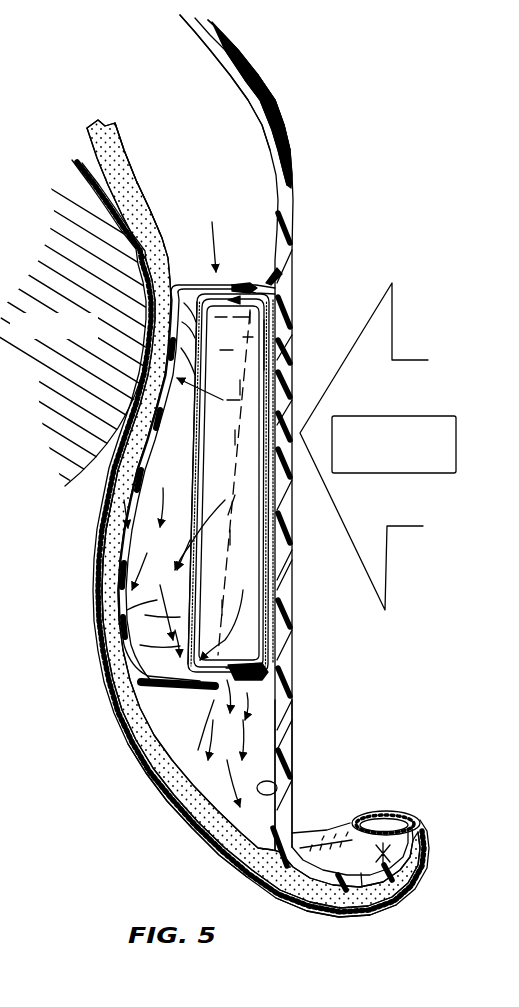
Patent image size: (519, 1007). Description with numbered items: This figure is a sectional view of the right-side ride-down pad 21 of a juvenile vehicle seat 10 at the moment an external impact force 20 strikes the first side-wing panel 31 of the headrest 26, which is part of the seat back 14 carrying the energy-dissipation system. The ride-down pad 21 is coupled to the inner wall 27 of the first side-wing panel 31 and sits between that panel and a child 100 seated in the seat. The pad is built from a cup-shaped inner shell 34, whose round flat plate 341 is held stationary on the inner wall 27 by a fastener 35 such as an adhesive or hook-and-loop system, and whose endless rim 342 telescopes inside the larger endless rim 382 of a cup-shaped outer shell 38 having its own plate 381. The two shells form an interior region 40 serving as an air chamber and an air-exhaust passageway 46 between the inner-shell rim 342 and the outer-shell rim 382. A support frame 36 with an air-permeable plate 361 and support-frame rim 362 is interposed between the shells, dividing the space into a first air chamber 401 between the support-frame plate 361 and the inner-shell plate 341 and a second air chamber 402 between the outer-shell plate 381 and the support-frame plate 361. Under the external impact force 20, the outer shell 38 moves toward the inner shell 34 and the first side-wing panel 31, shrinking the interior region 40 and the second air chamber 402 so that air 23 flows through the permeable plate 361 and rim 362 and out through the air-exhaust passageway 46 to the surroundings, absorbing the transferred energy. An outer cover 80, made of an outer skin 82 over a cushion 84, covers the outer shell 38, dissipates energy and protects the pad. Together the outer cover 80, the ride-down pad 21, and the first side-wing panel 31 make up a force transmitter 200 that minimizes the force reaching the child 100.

The juvenile vehicle seat 10 is at (272, 92).
The seat back 14 is at (299, 216).
The external impact force 20 is at (371, 416).
The right-side ride-down pad 21 is at (206, 235).
The air 23 is at (123, 502).
The headrest 26 is at (295, 146).
The inner wall 27 is at (276, 784).
The first side-wing panel 31 is at (292, 757).
The inner shell 34 is at (266, 673).
The fastener 35 is at (275, 318).
The support frame 36 is at (185, 596).
The outer shell 38 is at (140, 732).
The interior region 40 is at (143, 540).
The air-exhaust passageway 46 is at (285, 268).
The outer cover 80 is at (300, 920).
The outer skin 82 is at (80, 163).
The cushion 84 is at (101, 125).
The child 100 is at (88, 235).
The force transmitter 200 is at (196, 385).
The plate 341 is at (270, 370).
The endless rim 342 is at (252, 652).
The plate 361 is at (196, 483).
The support-frame rim 362 is at (270, 290).
The plate 381 is at (118, 563).
The endless rim 382 is at (172, 690).
The first air chamber 401 is at (250, 423).
The second air chamber 402 is at (150, 622).